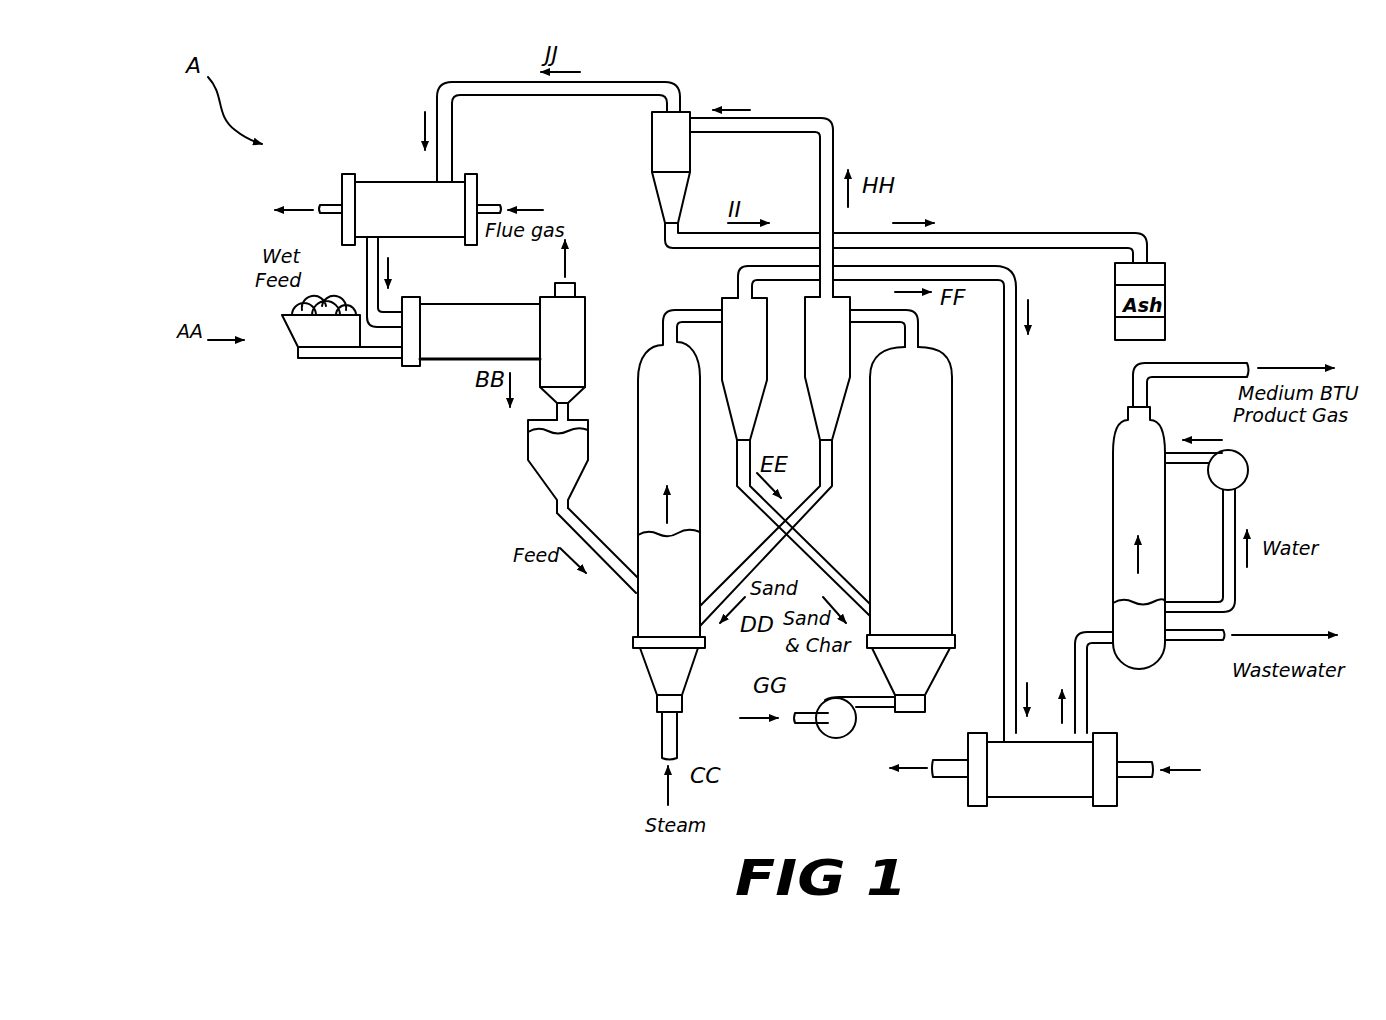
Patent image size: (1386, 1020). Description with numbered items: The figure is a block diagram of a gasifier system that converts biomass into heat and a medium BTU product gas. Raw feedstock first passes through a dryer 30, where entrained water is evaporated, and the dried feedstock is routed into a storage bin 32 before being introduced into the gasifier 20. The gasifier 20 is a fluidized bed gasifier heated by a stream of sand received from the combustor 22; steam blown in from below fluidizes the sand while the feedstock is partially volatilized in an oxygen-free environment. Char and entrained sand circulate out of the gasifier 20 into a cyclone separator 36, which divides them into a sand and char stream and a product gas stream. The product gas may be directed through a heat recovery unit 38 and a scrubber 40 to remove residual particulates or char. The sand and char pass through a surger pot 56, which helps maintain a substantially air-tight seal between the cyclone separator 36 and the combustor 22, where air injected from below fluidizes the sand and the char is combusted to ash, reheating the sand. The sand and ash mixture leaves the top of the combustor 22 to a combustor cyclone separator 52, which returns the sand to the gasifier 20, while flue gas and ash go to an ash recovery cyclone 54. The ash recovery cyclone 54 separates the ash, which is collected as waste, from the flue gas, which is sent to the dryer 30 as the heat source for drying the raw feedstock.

The gasifier 20 is at (633, 612).
The combustor 22 is at (947, 397).
The dryer 30 is at (452, 347).
The storage bin 32 is at (537, 463).
The cyclone separator 36 is at (717, 307).
The heat recovery unit 38 is at (1022, 797).
The scrubber 40 is at (1113, 538).
The combustor cyclone separator 52 is at (846, 365).
The ash recovery cyclone 54 is at (683, 120).
The surger pot 56 is at (915, 330).